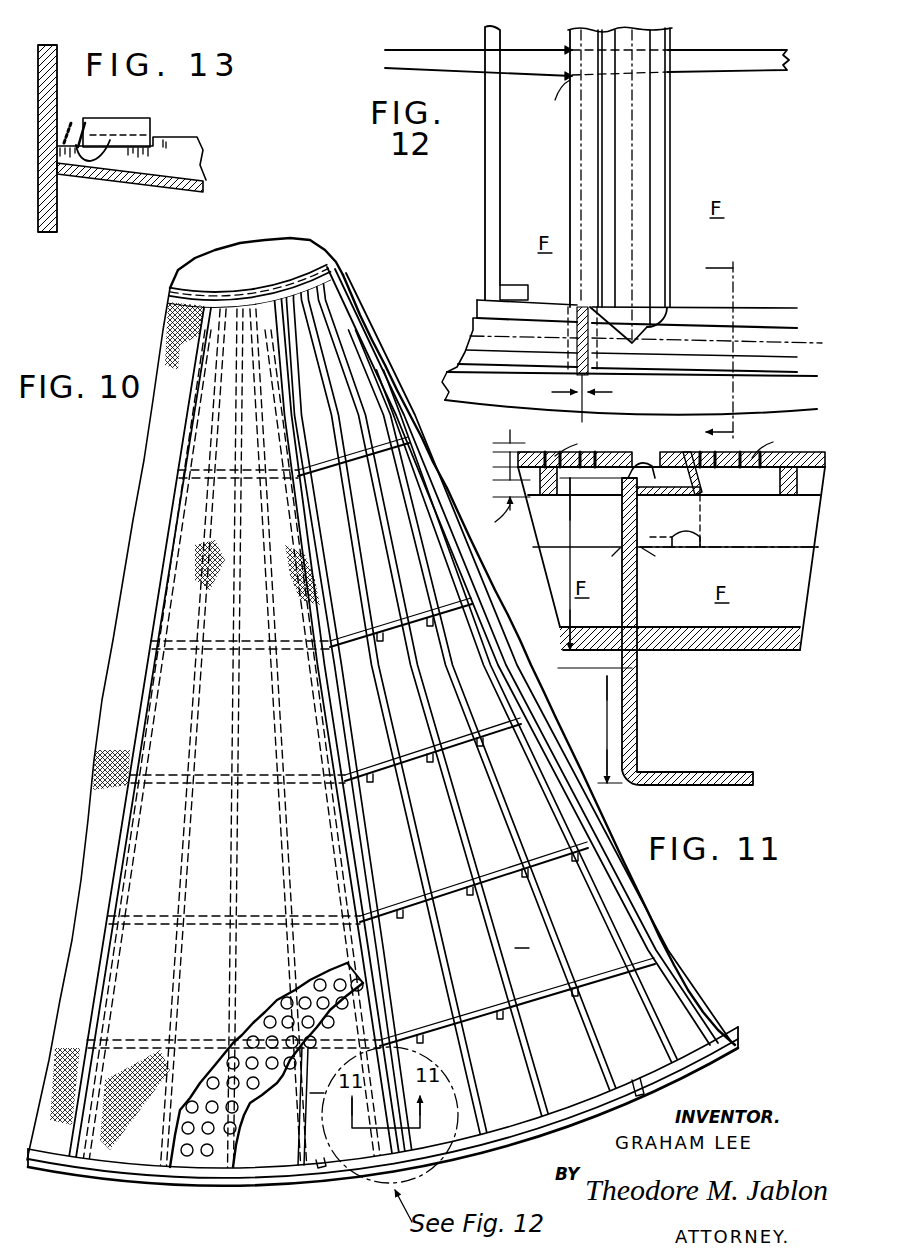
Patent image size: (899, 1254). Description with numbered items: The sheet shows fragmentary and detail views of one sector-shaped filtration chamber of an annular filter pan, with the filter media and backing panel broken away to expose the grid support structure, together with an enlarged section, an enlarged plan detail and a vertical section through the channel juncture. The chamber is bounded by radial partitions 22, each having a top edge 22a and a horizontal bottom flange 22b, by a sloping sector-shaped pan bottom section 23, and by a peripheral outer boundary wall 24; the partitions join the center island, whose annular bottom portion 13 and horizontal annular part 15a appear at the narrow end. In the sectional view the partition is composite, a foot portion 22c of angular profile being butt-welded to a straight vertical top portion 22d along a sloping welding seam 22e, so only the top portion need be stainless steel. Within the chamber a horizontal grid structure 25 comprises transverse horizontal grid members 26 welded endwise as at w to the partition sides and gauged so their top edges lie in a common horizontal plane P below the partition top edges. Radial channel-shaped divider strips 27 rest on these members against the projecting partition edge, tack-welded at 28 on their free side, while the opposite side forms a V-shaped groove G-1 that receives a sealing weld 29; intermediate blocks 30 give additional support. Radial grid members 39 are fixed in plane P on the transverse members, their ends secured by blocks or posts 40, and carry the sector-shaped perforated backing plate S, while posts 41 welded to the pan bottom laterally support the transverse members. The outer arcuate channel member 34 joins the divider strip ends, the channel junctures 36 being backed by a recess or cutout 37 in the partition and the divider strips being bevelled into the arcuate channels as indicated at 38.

In FIG. 10, the horizontal annular part 15a is at (366, 240).
In FIG. 13, the radial partition 22 is at (186, 168).
In FIG. 12, the radial partition 22 is at (570, 180).
In FIG. 11, the radial partition 22 is at (637, 592).
In FIG. 13, the top edge 22a is at (226, 122).
In FIG. 12, the top edge 22a is at (577, 146).
In FIG. 11, the top edge 22a is at (630, 498).
In FIG. 11, the horizontal bottom flange 22b is at (781, 747).
In FIG. 11, the foot portion 22c is at (611, 740).
In FIG. 11, the straight vertical top portion 22d is at (570, 535).
In FIG. 11, the welding seam 22e is at (681, 697).
In FIG. 11, the pan bottom section 23 is at (565, 650).
In FIG. 13, the peripheral outer boundary wall 24 is at (50, 218).
In FIG. 12, the peripheral outer boundary wall 24 is at (502, 390).
In FIG. 10, the peripheral outer boundary wall 24 is at (470, 1162).
In FIG. 12, the grid structure 25 is at (478, 180).
In FIG. 10, the grid structure 25 is at (655, 934).
In FIG. 12, the transverse horizontal grid member 26 is at (460, 62).
In FIG. 11, the transverse horizontal grid member 26 is at (540, 548).
In FIG. 10, the transverse horizontal grid member 26 is at (322, 462).
In FIG. 12, the radial channel-shaped divider strip 27 is at (660, 150).
In FIG. 11, the radial channel-shaped divider strip 27 is at (650, 468).
In FIG. 11, the tack weld 28 is at (700, 490).
In FIG. 11, the sealing weld 29 is at (646, 472).
In FIG. 11, the block 30 is at (685, 550).
In FIG. 13, the outer arcuate channel member 34 is at (76, 125).
In FIG. 12, the juncture 36 is at (590, 347).
In FIG. 13, the recess or cutout 37 is at (103, 150).
In FIG. 12, the recess or cutout 37 is at (577, 328).
In FIG. 12, the bevel 38 is at (662, 328).
In FIG. 12, the radial grid member 39 is at (485, 228).
In FIG. 11, the radial grid member 39 is at (548, 497).
In FIG. 10, the radial grid member 39 is at (448, 682).
In FIG. 10, the block or post 40 is at (632, 1082).
In FIG. 10, the post 41 is at (414, 902).
In FIG. 12, the annular bottom portion 13 is at (704, 355).
In FIG. 12, the perforated backing plate S is at (582, 375).
In FIG. 11, the perforated backing plate S is at (671, 446).
In FIG. 10, the perforated backing plate S is at (419, 1010).
In FIG. 12, the weld w is at (559, 97).
In FIG. 11, the weld w is at (633, 558).
In FIG. 11, the V-shaped groove G-1 is at (675, 521).
In FIG. 11, the common horizontal plane P is at (498, 482).